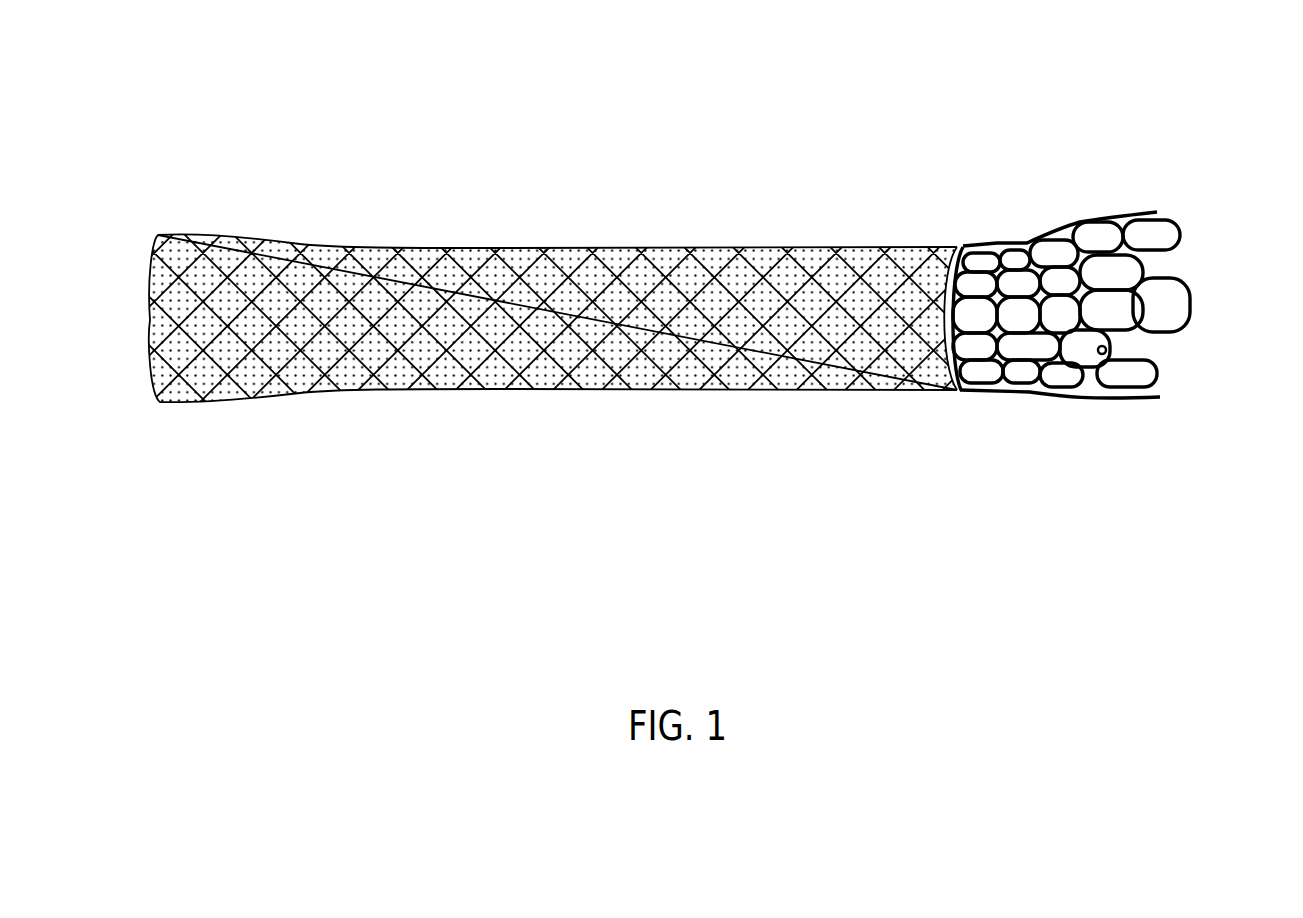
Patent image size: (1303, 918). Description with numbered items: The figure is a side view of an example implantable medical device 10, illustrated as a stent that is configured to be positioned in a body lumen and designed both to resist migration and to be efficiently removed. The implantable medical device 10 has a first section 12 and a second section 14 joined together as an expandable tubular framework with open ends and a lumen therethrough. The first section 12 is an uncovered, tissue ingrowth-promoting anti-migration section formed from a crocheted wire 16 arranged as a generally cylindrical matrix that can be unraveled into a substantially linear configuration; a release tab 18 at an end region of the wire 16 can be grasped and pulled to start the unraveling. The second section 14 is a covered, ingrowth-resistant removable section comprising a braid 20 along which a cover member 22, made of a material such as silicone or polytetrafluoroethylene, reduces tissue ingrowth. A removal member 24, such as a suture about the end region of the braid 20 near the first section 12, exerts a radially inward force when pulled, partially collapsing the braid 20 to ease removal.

The implantable medical device 10 is at (372, 106).
The first section 12 is at (1183, 218).
The second section 14 is at (967, 232).
The wire 16 is at (1187, 284).
The release tab 18 is at (1127, 348).
The braid 20 is at (455, 368).
The cover member 22 is at (545, 370).
The removal member 24 is at (942, 337).